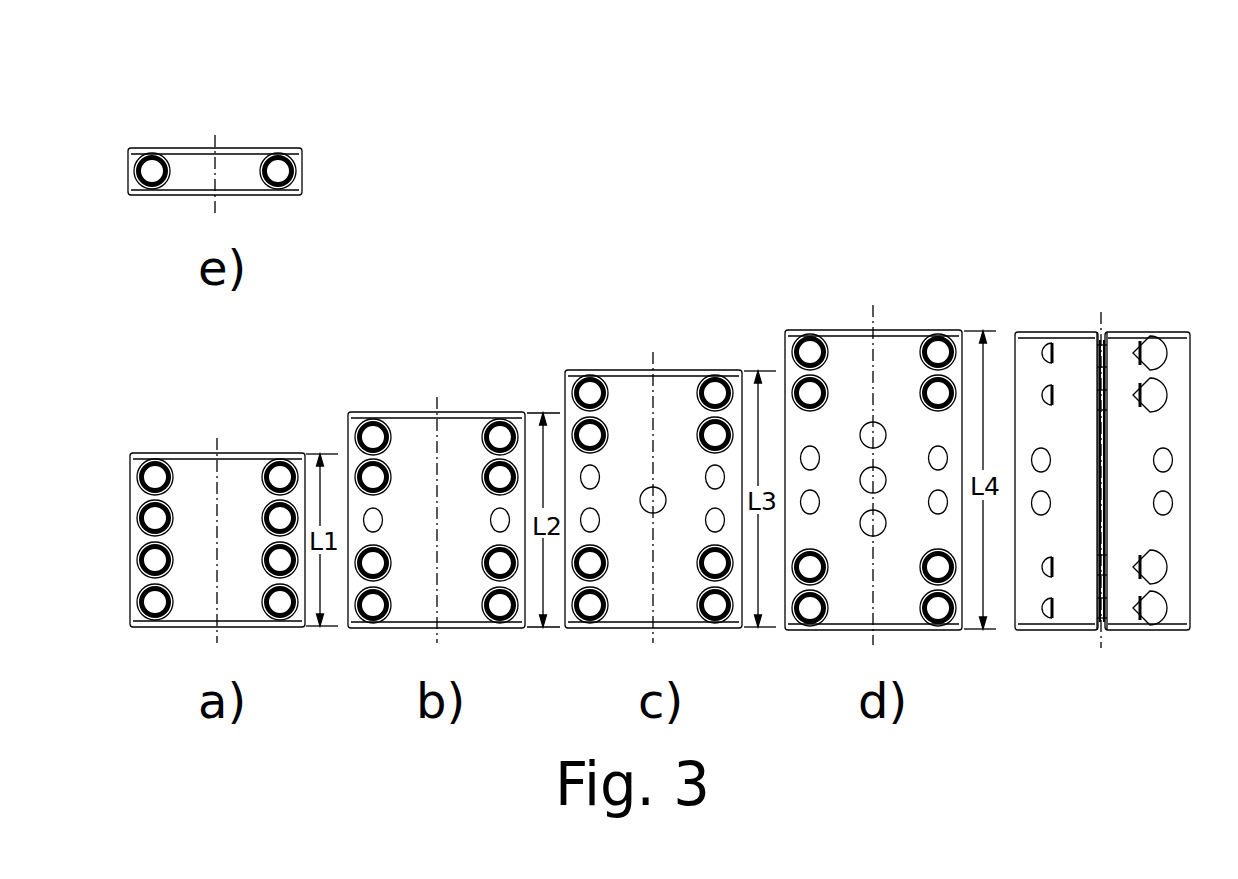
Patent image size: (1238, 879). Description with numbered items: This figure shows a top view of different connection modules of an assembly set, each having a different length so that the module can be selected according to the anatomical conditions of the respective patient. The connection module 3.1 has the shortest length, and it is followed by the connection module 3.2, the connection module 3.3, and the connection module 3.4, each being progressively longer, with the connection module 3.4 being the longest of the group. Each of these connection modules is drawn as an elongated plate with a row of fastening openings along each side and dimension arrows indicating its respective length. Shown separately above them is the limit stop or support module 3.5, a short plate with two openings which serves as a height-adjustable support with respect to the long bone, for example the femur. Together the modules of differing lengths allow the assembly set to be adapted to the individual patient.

The connection module 3.1 is at (182, 447).
The connection module 3.2 is at (412, 406).
The connection module 3.3 is at (605, 366).
The connection module 3.4 is at (857, 327).
The limit stop or support module 3.5 is at (178, 148).